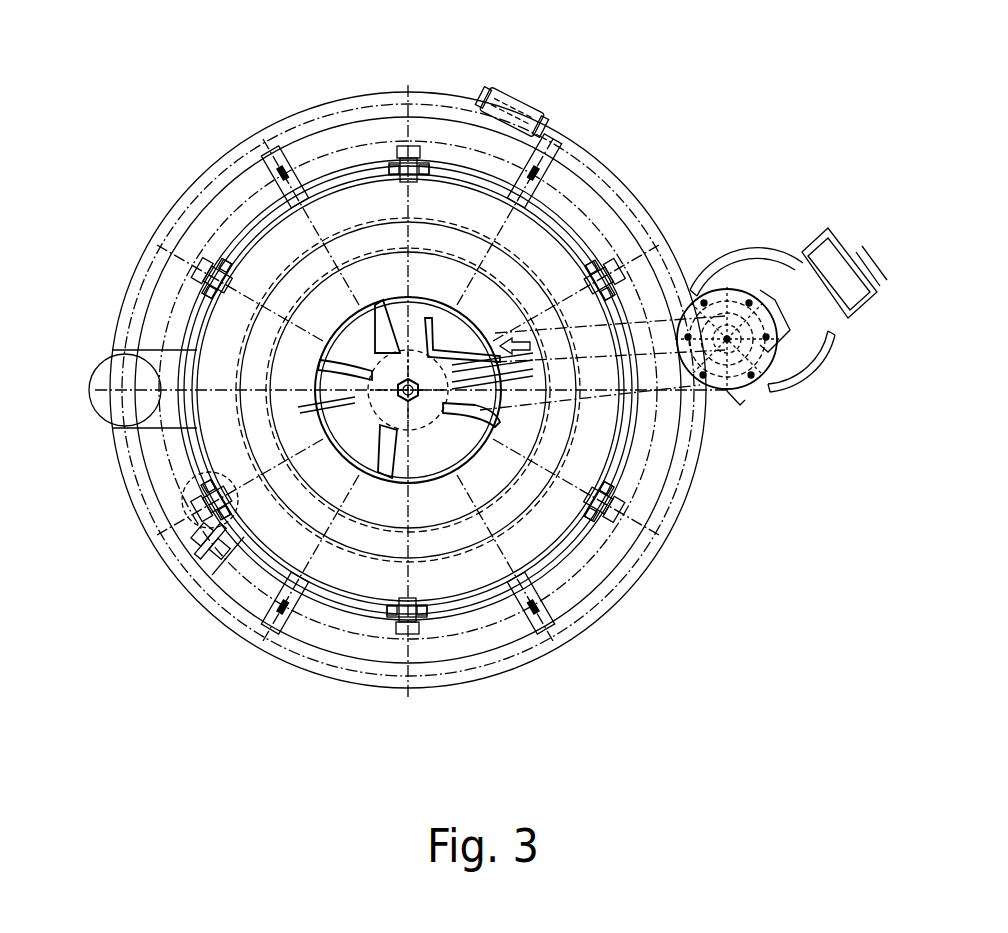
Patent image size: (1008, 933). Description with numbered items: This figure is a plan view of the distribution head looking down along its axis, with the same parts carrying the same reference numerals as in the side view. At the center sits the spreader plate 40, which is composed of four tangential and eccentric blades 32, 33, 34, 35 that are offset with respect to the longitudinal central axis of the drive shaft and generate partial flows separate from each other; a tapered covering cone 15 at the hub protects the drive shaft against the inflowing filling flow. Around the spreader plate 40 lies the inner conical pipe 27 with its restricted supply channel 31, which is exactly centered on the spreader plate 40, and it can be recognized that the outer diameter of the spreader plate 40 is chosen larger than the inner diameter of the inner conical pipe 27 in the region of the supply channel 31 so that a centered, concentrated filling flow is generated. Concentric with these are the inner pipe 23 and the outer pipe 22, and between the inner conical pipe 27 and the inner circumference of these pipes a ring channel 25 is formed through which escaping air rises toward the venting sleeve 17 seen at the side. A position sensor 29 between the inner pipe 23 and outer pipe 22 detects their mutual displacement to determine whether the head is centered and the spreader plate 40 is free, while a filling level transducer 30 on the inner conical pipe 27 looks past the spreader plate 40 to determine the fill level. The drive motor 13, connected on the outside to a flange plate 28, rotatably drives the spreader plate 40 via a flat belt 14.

The drive motor 13 is at (790, 325).
The flat belt 14 is at (653, 342).
The covering cone 15 is at (407, 358).
The venting sleeve 17 is at (100, 368).
The outer pipe 22 is at (262, 197).
The inner pipe 23 is at (333, 187).
The ring channel 25 is at (562, 500).
The inner conical pipe 27 is at (572, 493).
The flange plate 28 is at (548, 505).
The position sensor 29 is at (200, 533).
The filling level transducer 30 is at (520, 350).
The supply channel 31 is at (437, 482).
The blade 32 is at (347, 367).
The blade 33 is at (435, 323).
The blade 34 is at (497, 427).
The blade 35 is at (390, 483).
The spreader plate 40 is at (460, 447).